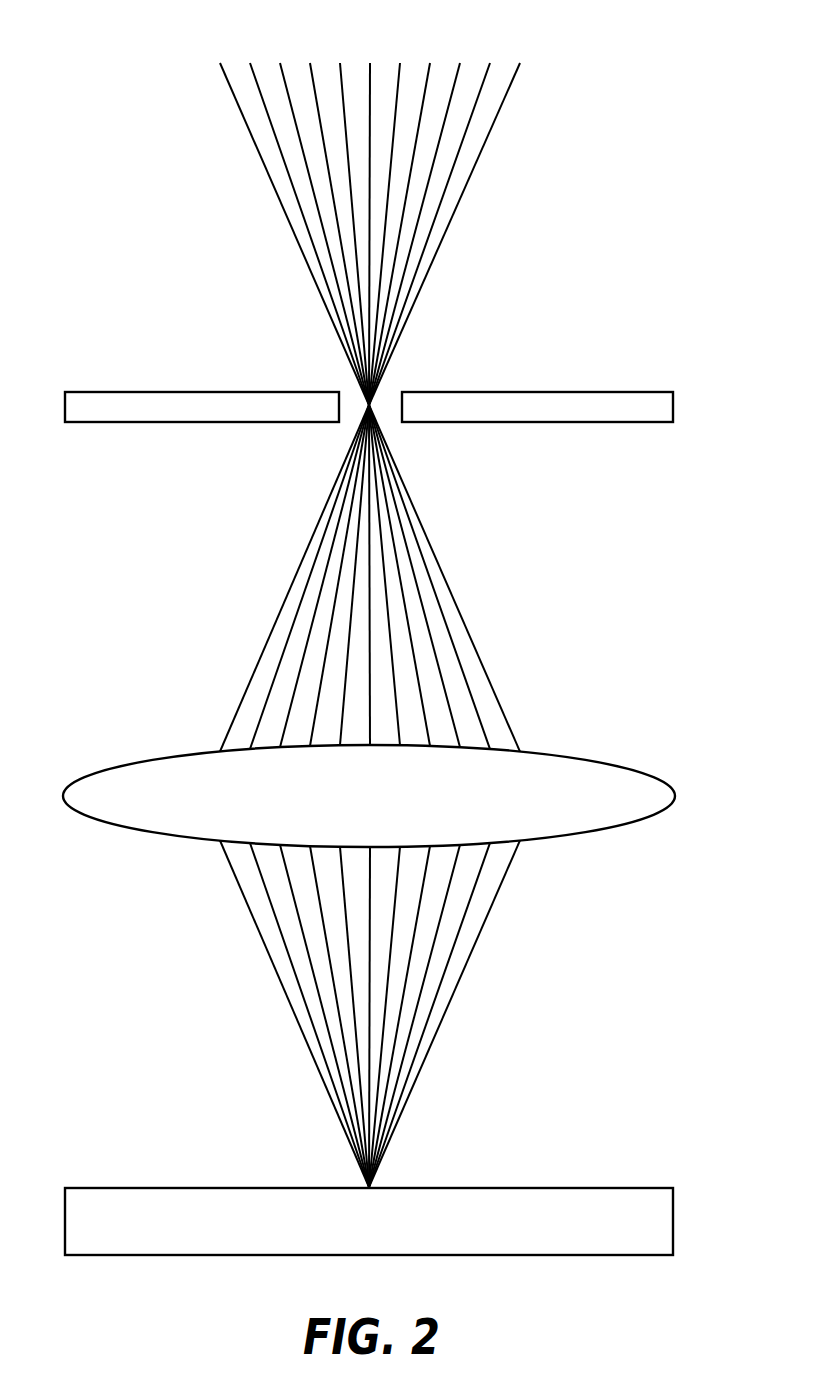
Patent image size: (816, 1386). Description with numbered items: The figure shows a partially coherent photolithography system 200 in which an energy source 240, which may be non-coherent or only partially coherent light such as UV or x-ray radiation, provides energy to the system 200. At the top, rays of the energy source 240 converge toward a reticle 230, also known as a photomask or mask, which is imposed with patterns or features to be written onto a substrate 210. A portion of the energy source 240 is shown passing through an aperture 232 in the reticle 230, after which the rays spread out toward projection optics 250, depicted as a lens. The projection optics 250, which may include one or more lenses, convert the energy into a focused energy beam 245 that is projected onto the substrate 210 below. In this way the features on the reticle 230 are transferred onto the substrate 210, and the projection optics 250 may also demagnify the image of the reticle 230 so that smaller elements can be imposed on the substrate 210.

The partially coherent photolithography system 200 is at (117, 17).
The substrate 210 is at (675, 1222).
The reticle 230 is at (674, 406).
The aperture 232 is at (388, 398).
The energy source 240 is at (447, 233).
The focused energy beam 245 is at (447, 1015).
The projection optics 250 is at (597, 773).